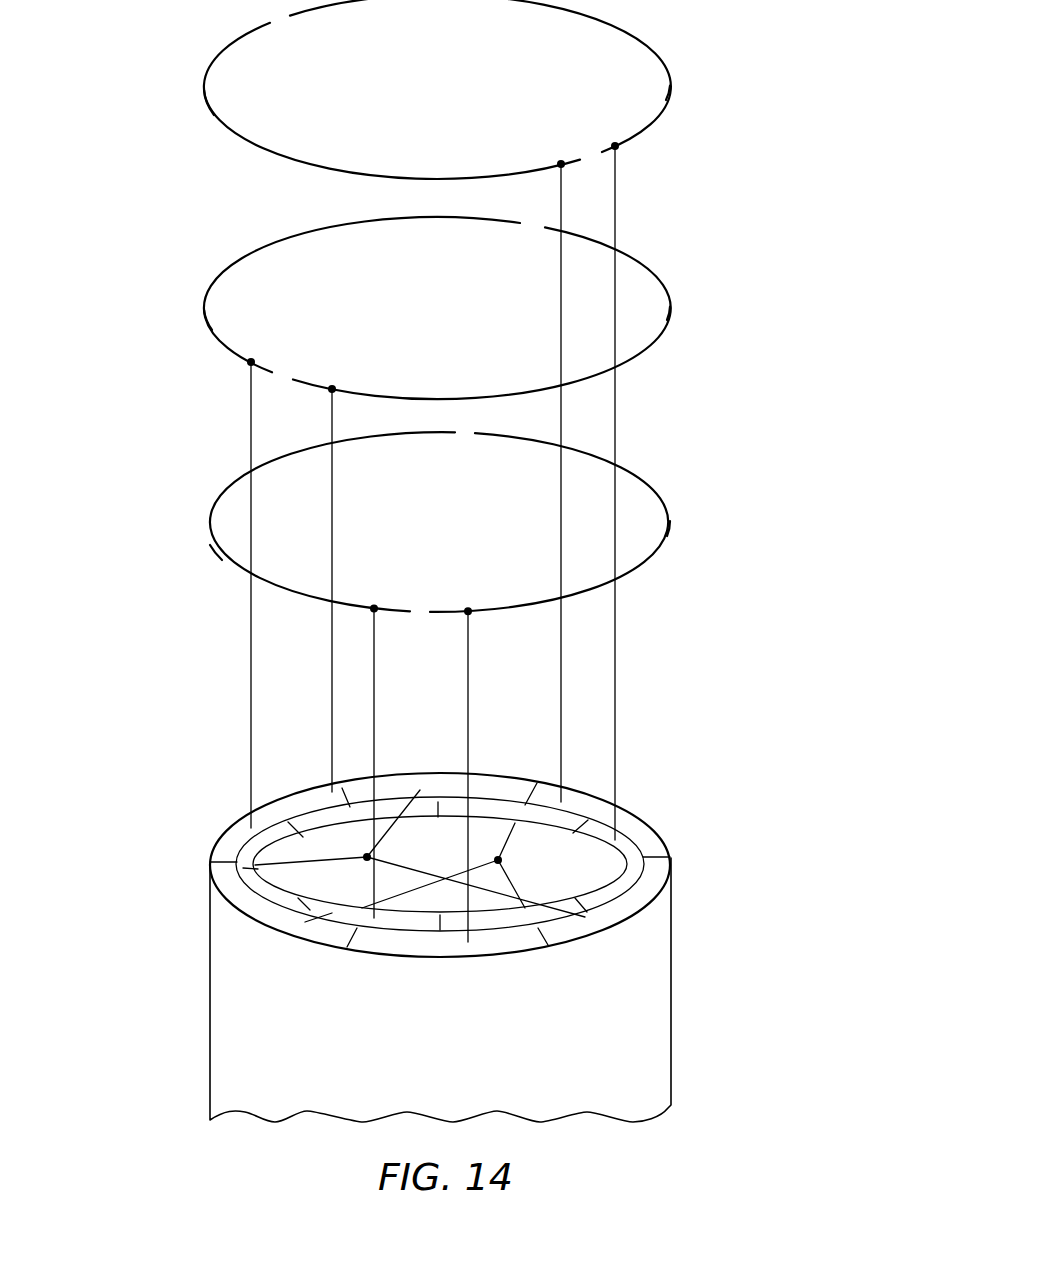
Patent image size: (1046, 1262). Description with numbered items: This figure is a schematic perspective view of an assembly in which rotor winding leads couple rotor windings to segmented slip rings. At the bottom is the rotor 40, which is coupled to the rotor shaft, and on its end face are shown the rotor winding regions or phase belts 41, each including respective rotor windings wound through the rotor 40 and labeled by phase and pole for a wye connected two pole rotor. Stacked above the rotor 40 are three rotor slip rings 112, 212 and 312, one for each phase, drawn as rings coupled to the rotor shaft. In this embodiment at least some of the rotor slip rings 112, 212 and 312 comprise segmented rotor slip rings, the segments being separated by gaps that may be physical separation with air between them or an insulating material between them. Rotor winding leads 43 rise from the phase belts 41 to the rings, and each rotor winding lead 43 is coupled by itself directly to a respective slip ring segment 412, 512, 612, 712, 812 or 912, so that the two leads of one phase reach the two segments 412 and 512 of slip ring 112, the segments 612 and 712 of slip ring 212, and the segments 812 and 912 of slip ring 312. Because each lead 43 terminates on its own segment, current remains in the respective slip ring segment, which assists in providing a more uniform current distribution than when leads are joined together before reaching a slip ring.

The rotor slip ring 312 is at (188, 75).
The rotor slip ring 212 is at (163, 290).
The rotor slip ring 112 is at (186, 520).
The slip ring segment 912 is at (211, 115).
The slip ring segment 812 is at (670, 83).
The slip ring segment 712 is at (210, 328).
The slip ring segment 612 is at (670, 302).
The slip ring segment 512 is at (222, 557).
The slip ring segment 412 is at (670, 518).
The rotor winding lead 43 is at (617, 772).
The rotor winding region 41 is at (637, 830).
The rotor 40 is at (660, 1012).